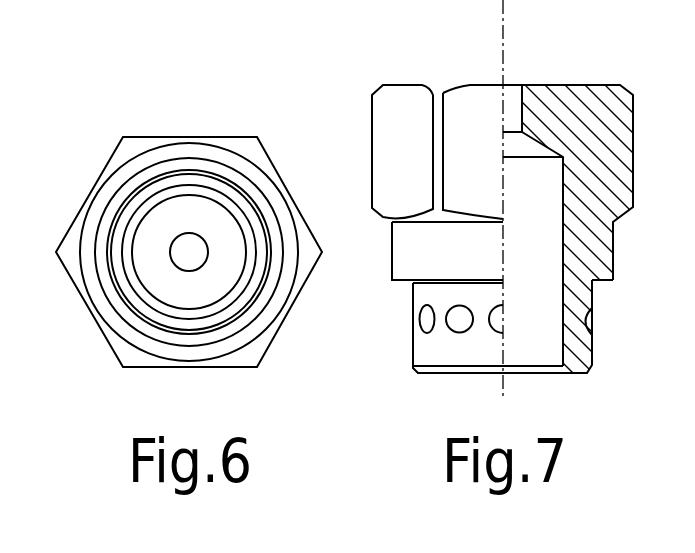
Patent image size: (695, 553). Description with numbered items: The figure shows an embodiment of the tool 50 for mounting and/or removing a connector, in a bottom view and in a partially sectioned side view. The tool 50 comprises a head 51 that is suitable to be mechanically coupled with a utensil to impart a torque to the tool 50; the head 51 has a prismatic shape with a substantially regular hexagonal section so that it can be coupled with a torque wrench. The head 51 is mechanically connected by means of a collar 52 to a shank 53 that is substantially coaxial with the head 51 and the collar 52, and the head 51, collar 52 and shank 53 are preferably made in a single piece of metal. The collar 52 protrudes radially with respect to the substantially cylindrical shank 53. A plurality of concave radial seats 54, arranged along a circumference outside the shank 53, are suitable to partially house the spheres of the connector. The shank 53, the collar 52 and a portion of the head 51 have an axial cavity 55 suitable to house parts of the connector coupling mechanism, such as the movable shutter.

In FIG. 6, the tool 50 is at (138, 83).
In FIG. 7, the tool 50 is at (353, 50).
In FIG. 6, the head 51 is at (127, 173).
In FIG. 7, the head 51 is at (388, 132).
In FIG. 6, the collar 52 is at (125, 313).
In FIG. 7, the collar 52 is at (423, 255).
In FIG. 6, the shank 53 is at (257, 232).
In FIG. 7, the shank 53 is at (422, 350).
In FIG. 7, the radial seats 54 is at (422, 317).
In FIG. 6, the axial cavity 55 is at (213, 280).
In FIG. 7, the axial cavity 55 is at (550, 274).